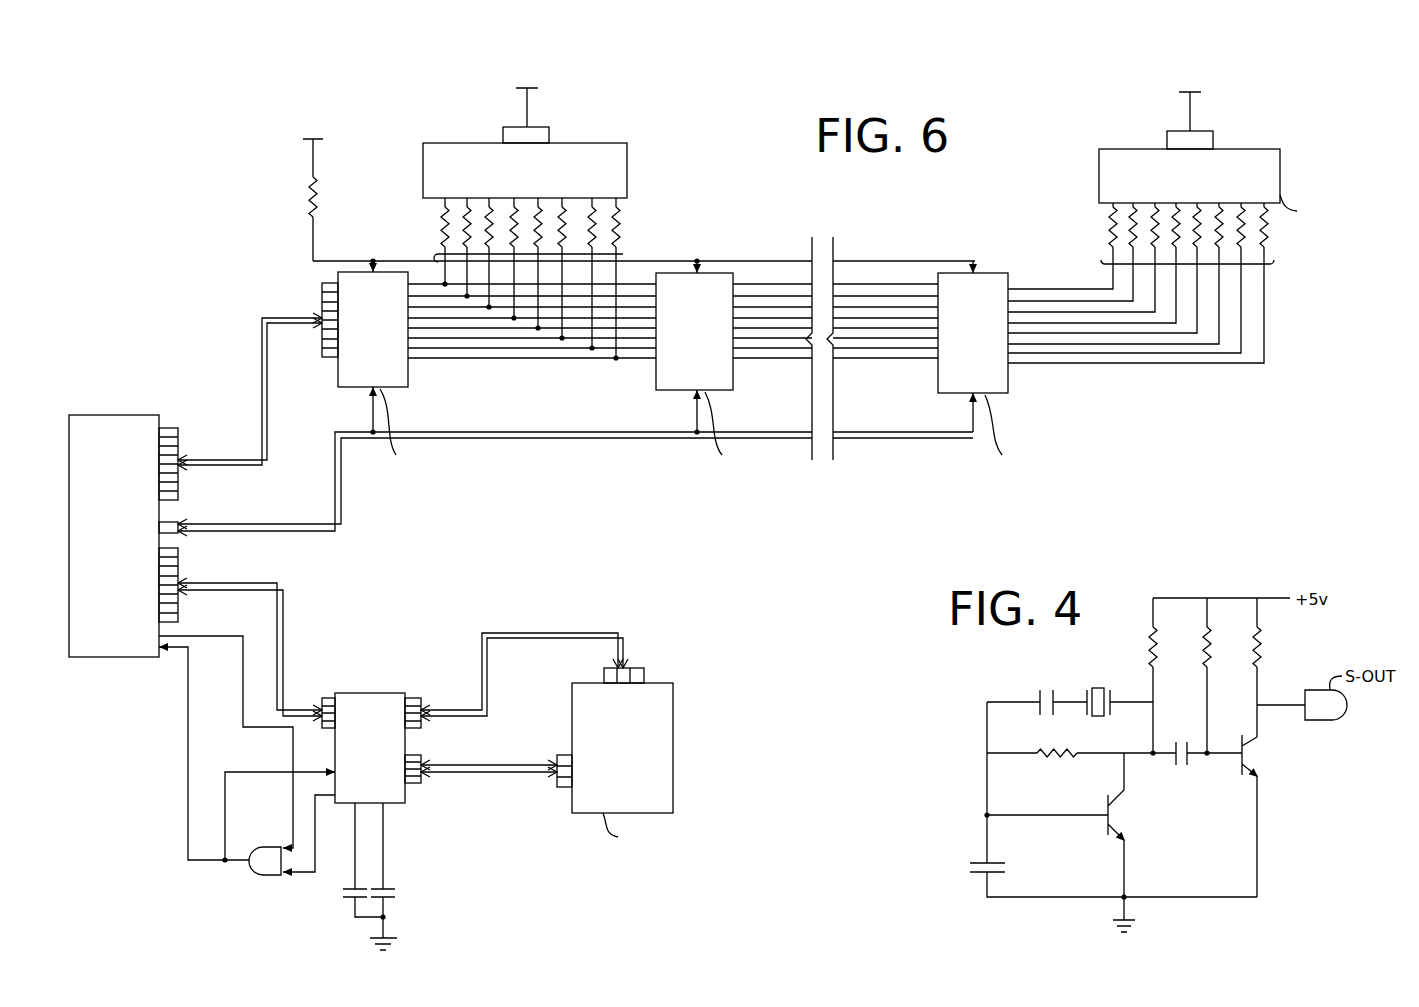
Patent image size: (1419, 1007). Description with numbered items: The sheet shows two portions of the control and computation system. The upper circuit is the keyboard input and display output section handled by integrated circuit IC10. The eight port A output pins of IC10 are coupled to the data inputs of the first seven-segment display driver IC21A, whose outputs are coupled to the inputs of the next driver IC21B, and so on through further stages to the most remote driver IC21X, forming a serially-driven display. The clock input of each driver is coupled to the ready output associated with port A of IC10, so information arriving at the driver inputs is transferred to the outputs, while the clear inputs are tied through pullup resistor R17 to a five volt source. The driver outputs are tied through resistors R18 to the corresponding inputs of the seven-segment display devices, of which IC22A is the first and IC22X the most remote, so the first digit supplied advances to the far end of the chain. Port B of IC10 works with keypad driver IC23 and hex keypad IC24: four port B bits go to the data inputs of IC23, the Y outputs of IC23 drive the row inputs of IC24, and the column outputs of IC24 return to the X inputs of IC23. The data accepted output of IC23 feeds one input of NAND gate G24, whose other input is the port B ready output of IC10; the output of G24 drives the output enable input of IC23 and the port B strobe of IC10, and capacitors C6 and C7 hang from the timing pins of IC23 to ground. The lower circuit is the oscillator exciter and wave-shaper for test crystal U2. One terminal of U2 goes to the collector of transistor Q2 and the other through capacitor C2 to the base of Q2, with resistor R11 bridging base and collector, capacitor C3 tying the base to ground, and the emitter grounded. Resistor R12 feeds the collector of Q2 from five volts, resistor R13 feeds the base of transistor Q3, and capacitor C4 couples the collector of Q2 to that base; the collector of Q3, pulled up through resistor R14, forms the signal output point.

In FIG. 6, the pullup resistor R17 is at (299, 189).
In FIG. 6, the resistors R18 is at (625, 253).
In FIG. 6, the 7-segment display device IC22A is at (491, 170).
In FIG. 6, the 7-segment display device IC22X is at (1165, 174).
In FIG. 6, the 7-segment display driver IC21A is at (408, 384).
In FIG. 6, the 7-segment display driver IC21B is at (656, 386).
In FIG. 6, the 7-segment display driver IC21X is at (938, 385).
In FIG. 6, the integrated circuit IC10 is at (119, 450).
In FIG. 6, the keypad driver IC23 is at (369, 693).
In FIG. 6, the hex keypad IC24 is at (655, 800).
In FIG. 6, the NAND gate G24 is at (254, 879).
In FIG. 6, the capacitor C6 is at (342, 898).
In FIG. 6, the capacitor C7 is at (395, 898).
In FIG. 4, the capacitor C2 is at (1058, 677).
In FIG. 4, the test crystal U2 is at (1112, 677).
In FIG. 4, the resistor R11 is at (1043, 760).
In FIG. 4, the resistor R12 is at (1157, 670).
In FIG. 4, the resistor R13 is at (1211, 670).
In FIG. 4, the resistor R14 is at (1261, 670).
In FIG. 4, the capacitor C3 is at (967, 882).
In FIG. 4, the capacitor C4 is at (1180, 766).
In FIG. 4, the transistor Q2 is at (1108, 832).
In FIG. 4, the transistor Q3 is at (1256, 746).